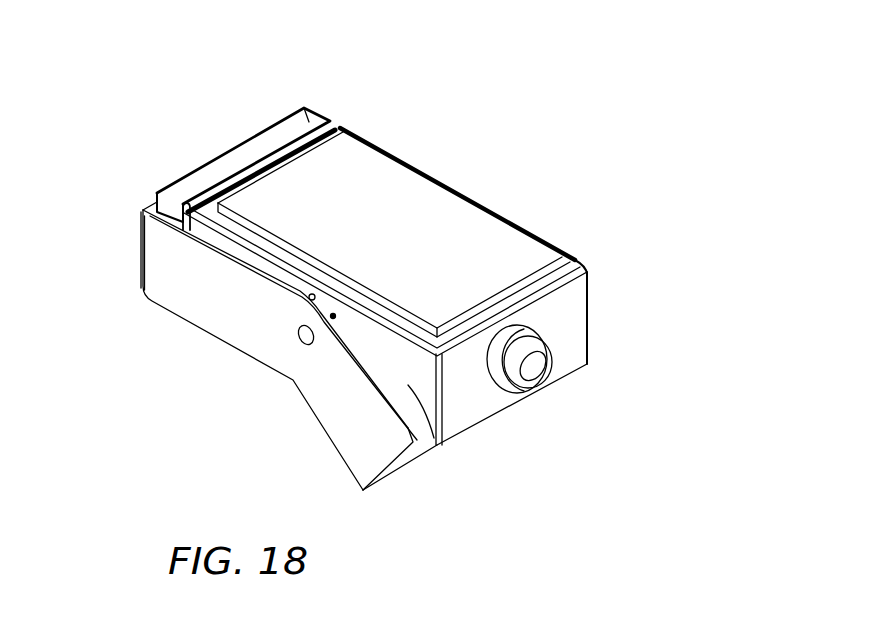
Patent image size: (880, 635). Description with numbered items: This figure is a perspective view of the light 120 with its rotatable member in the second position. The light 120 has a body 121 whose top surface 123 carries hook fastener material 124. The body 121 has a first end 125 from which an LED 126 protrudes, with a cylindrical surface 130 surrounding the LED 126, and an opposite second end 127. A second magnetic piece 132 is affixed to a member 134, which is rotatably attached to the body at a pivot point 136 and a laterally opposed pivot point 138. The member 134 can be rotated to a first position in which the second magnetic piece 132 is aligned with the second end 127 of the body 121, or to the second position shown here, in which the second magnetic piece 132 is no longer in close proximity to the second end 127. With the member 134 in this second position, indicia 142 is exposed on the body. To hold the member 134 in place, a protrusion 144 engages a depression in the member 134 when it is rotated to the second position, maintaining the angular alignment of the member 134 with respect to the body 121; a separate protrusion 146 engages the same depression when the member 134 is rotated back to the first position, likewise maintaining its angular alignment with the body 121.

The light 120 is at (673, 127).
The body 121 is at (574, 258).
The top surface 123 is at (190, 230).
The hook fastener material 124 is at (362, 205).
The first end 125 is at (567, 323).
The LED 126 is at (538, 368).
The second end 127 is at (343, 130).
The cylindrical surface 130 is at (500, 378).
The second magnetic piece 132 is at (303, 108).
The member 134 is at (203, 315).
The pivot point 136 is at (302, 344).
The pivot point 138 is at (478, 205).
The indicia 142 is at (438, 445).
The protrusion 144 is at (333, 316).
The protrusion 146 is at (313, 297).